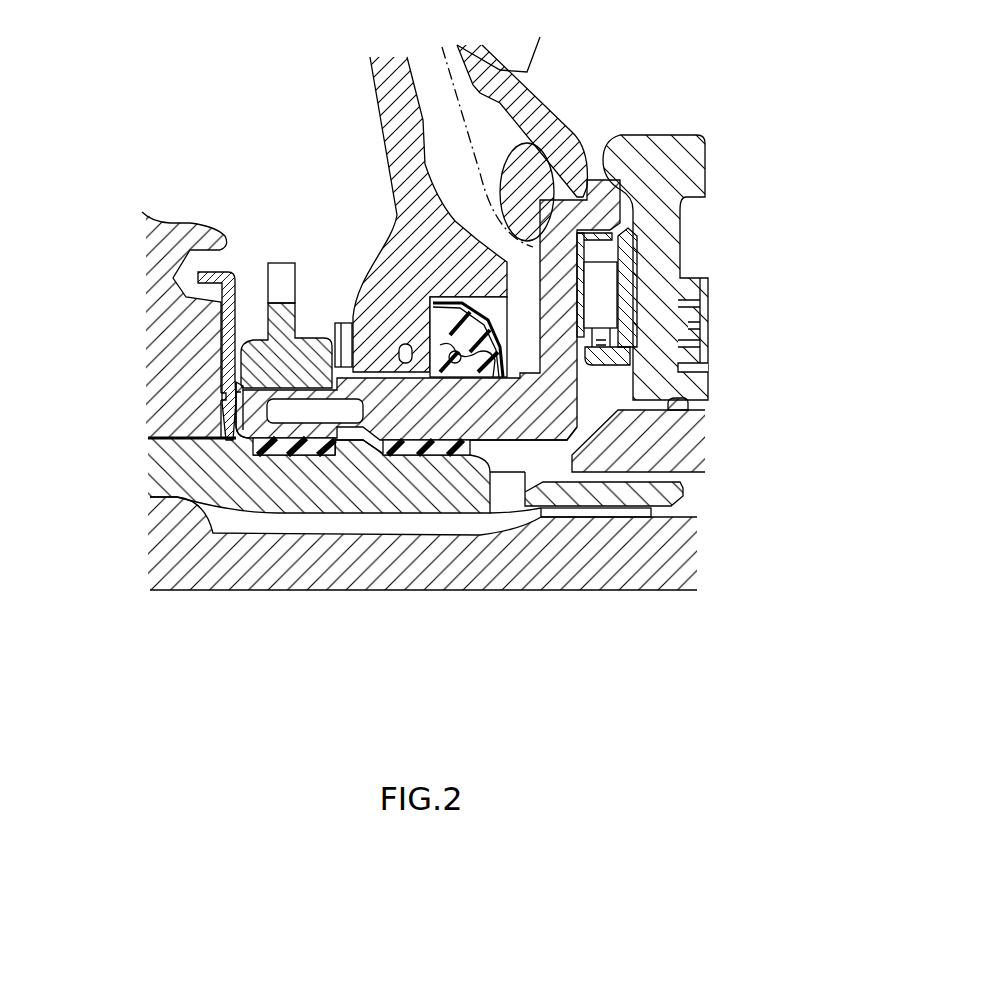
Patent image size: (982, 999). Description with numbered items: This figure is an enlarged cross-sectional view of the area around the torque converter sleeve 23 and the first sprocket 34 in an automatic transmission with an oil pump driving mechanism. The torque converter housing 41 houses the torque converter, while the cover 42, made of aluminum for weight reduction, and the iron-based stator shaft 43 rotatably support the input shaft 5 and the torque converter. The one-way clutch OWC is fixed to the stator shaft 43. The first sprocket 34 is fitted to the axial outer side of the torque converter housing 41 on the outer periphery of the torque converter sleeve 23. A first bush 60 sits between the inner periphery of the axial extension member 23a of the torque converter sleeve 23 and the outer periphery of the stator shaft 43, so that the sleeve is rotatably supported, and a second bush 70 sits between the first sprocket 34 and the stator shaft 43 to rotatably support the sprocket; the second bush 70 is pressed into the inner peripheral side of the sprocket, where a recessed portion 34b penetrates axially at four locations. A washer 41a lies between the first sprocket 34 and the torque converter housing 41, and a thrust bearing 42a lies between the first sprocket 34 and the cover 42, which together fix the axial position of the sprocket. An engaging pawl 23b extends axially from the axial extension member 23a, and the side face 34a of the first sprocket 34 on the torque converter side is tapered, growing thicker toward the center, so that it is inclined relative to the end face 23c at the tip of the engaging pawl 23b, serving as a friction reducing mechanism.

The torque converter housing 41 is at (397, 100).
The washer 41a is at (348, 328).
The cover 42 is at (168, 384).
The thrust bearing 42a is at (230, 277).
The stator shaft 43 is at (187, 465).
The input shaft 5 is at (165, 555).
The torque converter sleeve 23 is at (590, 395).
The axial extension member 23a is at (495, 430).
The engaging pawl 23b is at (305, 418).
The end face 23c is at (240, 425).
The first sprocket 34 is at (260, 352).
The side face 34a is at (340, 428).
The recessed portion 34b is at (237, 392).
The first bush 60 is at (437, 448).
The second bush 70 is at (273, 448).
The one-way clutch OWC is at (676, 130).